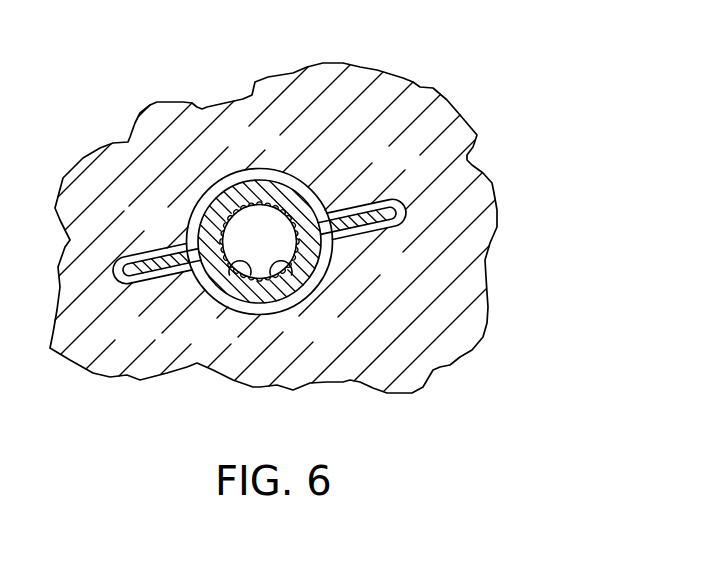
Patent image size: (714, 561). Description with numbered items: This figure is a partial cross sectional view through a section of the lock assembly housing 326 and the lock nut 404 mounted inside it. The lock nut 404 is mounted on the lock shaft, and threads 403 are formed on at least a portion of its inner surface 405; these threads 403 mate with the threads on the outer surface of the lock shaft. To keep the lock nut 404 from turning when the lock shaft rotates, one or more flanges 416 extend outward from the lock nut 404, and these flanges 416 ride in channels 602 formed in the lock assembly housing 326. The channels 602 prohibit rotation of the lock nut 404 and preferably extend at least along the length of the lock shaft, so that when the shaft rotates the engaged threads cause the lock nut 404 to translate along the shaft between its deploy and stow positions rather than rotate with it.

The lock assembly housing 326 is at (368, 78).
The lock nut 404 is at (257, 159).
The flanges 416 is at (389, 196).
The channels 602 is at (389, 229).
The threads 403 is at (225, 262).
The inner surface 405 is at (286, 268).